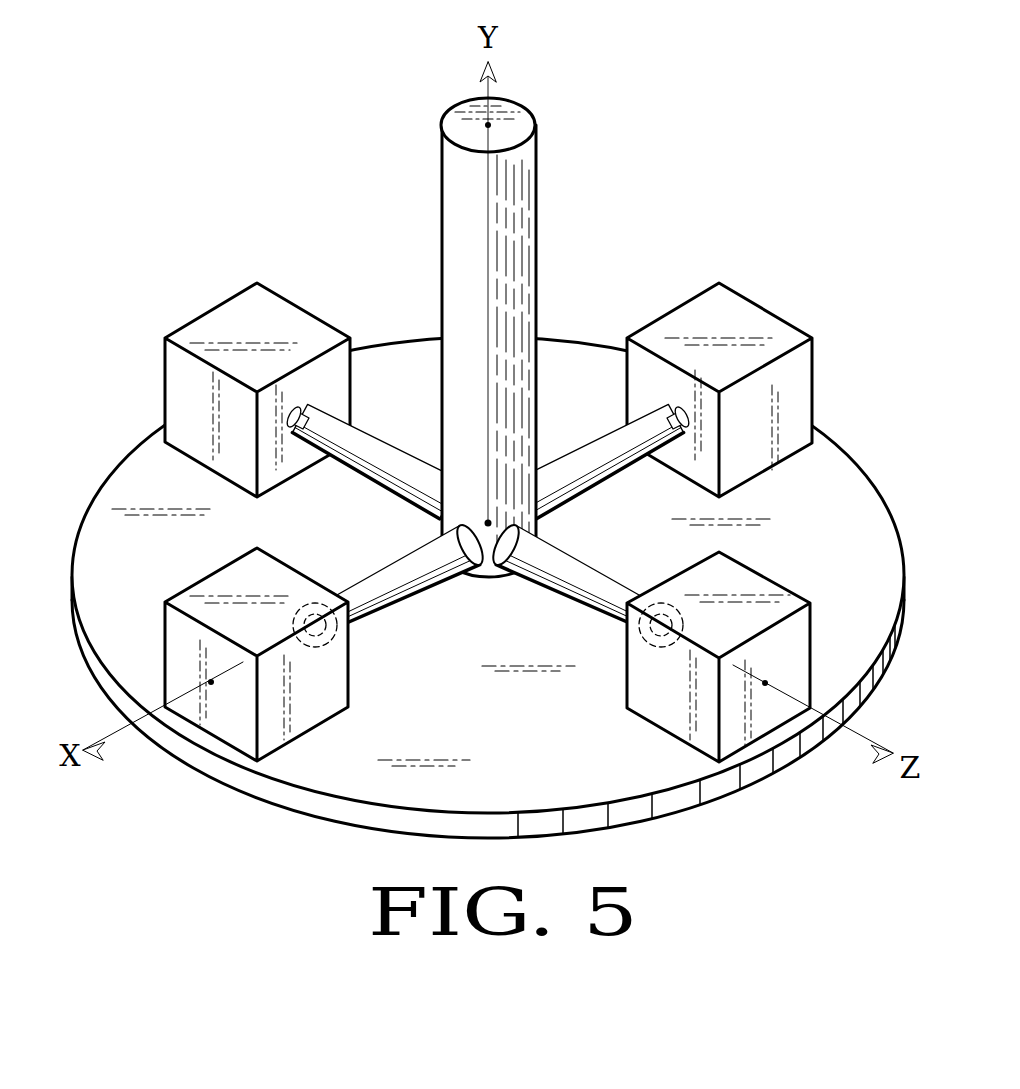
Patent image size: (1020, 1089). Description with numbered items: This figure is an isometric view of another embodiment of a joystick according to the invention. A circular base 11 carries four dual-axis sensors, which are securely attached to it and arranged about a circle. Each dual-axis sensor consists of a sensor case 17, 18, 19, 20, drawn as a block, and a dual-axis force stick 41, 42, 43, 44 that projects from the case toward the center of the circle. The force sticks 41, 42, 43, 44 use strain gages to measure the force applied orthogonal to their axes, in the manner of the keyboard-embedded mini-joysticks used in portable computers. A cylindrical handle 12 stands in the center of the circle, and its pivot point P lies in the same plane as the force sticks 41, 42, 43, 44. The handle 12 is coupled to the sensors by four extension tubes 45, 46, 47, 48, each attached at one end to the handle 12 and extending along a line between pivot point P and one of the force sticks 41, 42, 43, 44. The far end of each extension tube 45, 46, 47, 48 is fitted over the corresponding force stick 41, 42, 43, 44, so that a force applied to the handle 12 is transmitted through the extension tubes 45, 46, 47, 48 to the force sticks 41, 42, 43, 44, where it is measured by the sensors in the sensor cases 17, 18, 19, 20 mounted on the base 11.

The base 11 is at (140, 492).
The handle 12 is at (477, 200).
The sensor case 17 is at (188, 650).
The sensor case 18 is at (188, 397).
The sensor case 19 is at (800, 408).
The sensor case 20 is at (788, 690).
The dual-axis force stick 41 is at (313, 613).
The dual-axis force stick 42 is at (308, 395).
The dual-axis force stick 43 is at (666, 405).
The dual-axis force stick 44 is at (655, 610).
The extension tube 45 is at (394, 575).
The extension tube 46 is at (416, 487).
The extension tube 47 is at (563, 483).
The extension tube 48 is at (583, 575).